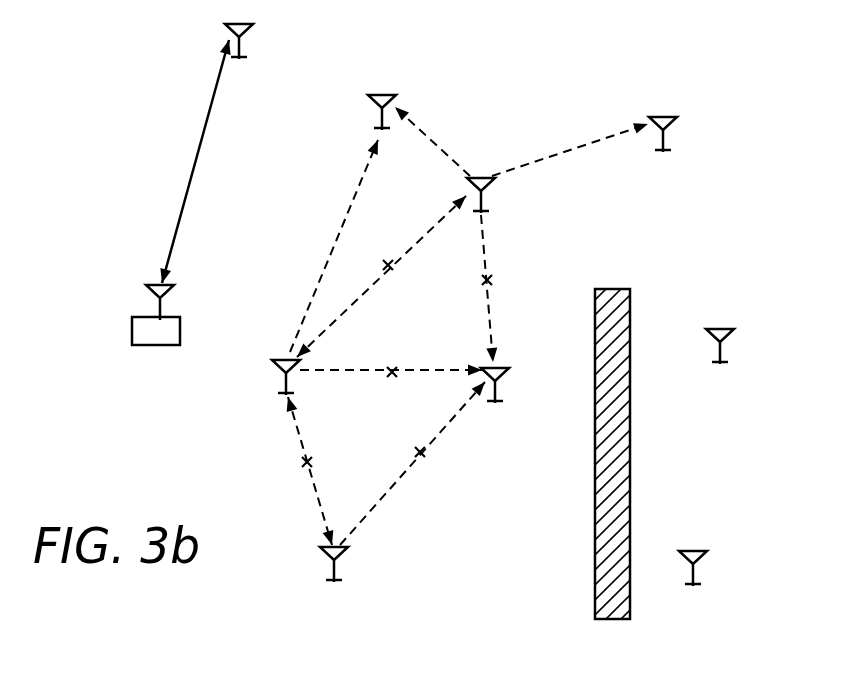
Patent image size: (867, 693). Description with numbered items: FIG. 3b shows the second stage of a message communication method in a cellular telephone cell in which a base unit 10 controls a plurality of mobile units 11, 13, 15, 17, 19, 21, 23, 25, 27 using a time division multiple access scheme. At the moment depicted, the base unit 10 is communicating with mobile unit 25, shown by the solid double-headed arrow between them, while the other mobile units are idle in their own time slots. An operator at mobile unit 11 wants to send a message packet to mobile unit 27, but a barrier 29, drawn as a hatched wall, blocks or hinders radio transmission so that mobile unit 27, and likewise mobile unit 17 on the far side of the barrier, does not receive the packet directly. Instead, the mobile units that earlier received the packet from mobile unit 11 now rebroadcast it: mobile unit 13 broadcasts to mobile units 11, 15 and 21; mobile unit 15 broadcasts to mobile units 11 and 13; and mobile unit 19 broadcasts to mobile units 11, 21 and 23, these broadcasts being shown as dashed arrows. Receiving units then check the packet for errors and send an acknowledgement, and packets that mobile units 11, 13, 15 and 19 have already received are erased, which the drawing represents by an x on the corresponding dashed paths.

The base unit 10 is at (150, 346).
The mobile unit 11 is at (496, 403).
The mobile unit 13 is at (283, 394).
The mobile unit 15 is at (330, 562).
The mobile unit 17 is at (697, 572).
The mobile unit 19 is at (484, 204).
The mobile unit 21 is at (378, 112).
The mobile unit 23 is at (672, 150).
The mobile unit 25 is at (242, 48).
The mobile unit 27 is at (724, 350).
The barrier 29 is at (596, 600).